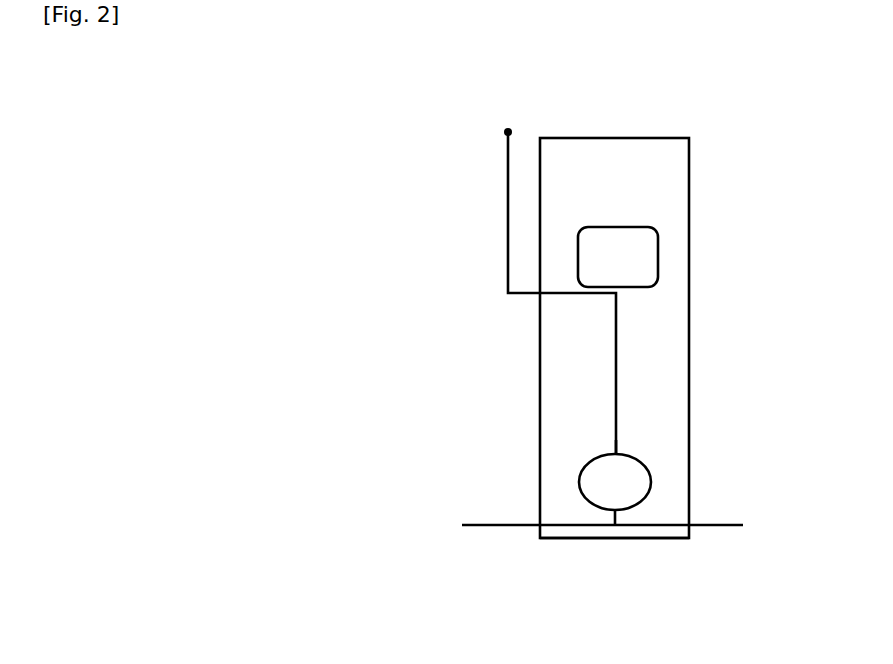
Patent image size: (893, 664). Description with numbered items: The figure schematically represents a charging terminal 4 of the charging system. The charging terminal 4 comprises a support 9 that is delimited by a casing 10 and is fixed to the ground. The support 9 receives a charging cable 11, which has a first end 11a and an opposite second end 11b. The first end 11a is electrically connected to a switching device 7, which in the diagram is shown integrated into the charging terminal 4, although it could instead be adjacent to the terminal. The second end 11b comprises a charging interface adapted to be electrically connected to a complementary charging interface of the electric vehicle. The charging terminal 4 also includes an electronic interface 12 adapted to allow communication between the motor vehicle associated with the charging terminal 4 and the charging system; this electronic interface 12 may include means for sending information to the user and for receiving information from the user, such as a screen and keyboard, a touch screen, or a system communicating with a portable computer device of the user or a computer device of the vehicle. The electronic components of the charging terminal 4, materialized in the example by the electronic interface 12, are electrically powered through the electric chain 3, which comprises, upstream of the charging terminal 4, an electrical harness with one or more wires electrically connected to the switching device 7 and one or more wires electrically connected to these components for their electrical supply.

The electric chain 3 is at (508, 527).
The charging terminal 4 is at (698, 355).
The switching device 7 is at (635, 483).
The support 9 is at (573, 370).
The casing 10 is at (613, 540).
The charging cable 11 is at (506, 238).
The first end 11a is at (607, 453).
The second end 11b is at (505, 131).
The electronic interface 12 is at (643, 257).